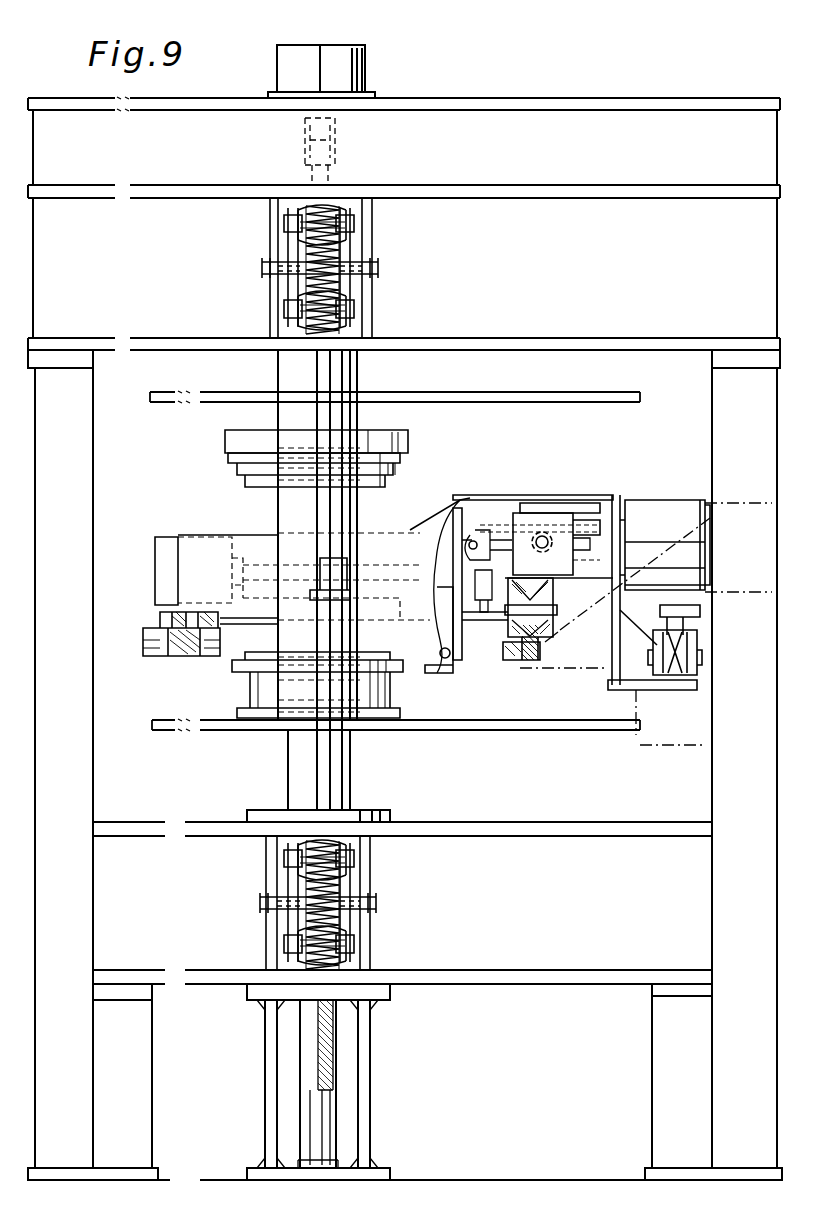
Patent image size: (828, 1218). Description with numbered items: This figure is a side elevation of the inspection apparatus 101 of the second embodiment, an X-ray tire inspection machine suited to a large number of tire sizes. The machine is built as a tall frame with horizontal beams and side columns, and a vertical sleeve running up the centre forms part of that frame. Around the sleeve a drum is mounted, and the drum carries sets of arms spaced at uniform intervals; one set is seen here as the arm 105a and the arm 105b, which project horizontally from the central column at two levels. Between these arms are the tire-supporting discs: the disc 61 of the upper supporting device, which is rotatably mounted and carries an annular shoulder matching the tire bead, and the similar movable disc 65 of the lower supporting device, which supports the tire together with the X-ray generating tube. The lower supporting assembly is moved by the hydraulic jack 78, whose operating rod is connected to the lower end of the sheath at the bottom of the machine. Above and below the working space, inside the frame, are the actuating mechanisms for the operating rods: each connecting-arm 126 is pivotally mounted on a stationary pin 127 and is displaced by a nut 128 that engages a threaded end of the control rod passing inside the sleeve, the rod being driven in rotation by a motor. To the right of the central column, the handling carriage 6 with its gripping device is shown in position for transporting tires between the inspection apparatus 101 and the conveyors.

The inspection apparatus 101 is at (521, 91).
The connecting-arm 126 is at (348, 252).
The stationary pin 127 is at (378, 268).
The nut 128 is at (347, 308).
The disc 61 is at (237, 442).
The movable disc 65 is at (232, 667).
The arm 105a is at (478, 402).
The arm 105b is at (478, 731).
The handling carriage 6 is at (564, 686).
The hydraulic jack 78 is at (325, 1127).